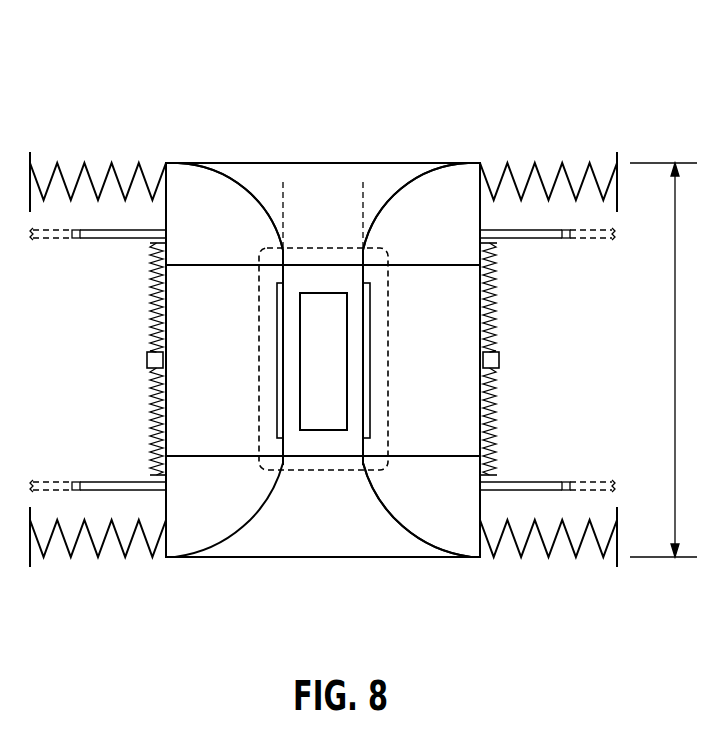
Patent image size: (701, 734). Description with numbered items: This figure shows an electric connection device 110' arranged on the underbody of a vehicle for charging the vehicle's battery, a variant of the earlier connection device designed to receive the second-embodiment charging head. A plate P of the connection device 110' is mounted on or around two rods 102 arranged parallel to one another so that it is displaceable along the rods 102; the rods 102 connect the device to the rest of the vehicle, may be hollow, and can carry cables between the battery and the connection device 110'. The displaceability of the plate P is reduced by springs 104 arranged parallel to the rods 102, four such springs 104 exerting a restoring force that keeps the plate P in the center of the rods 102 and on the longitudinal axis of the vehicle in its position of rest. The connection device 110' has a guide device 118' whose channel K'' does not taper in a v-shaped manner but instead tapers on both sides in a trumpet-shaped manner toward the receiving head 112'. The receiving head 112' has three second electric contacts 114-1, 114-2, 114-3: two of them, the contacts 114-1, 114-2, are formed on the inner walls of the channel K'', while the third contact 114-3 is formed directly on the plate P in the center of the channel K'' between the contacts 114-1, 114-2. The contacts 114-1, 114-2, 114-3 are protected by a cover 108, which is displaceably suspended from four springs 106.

The electric connection device 110' is at (419, 289).
The rods 102 is at (93, 239).
The springs 104 is at (88, 157).
The springs 106 is at (156, 335).
The cover 108 is at (200, 456).
The receiving head 112' is at (365, 377).
The second electric contact 114-1 is at (277, 365).
The second electric contact 114-2 is at (370, 298).
The second electric contact 114-3 is at (323, 430).
The guide device 118' is at (417, 547).
The channel K'' is at (234, 168).
The plate P is at (385, 170).